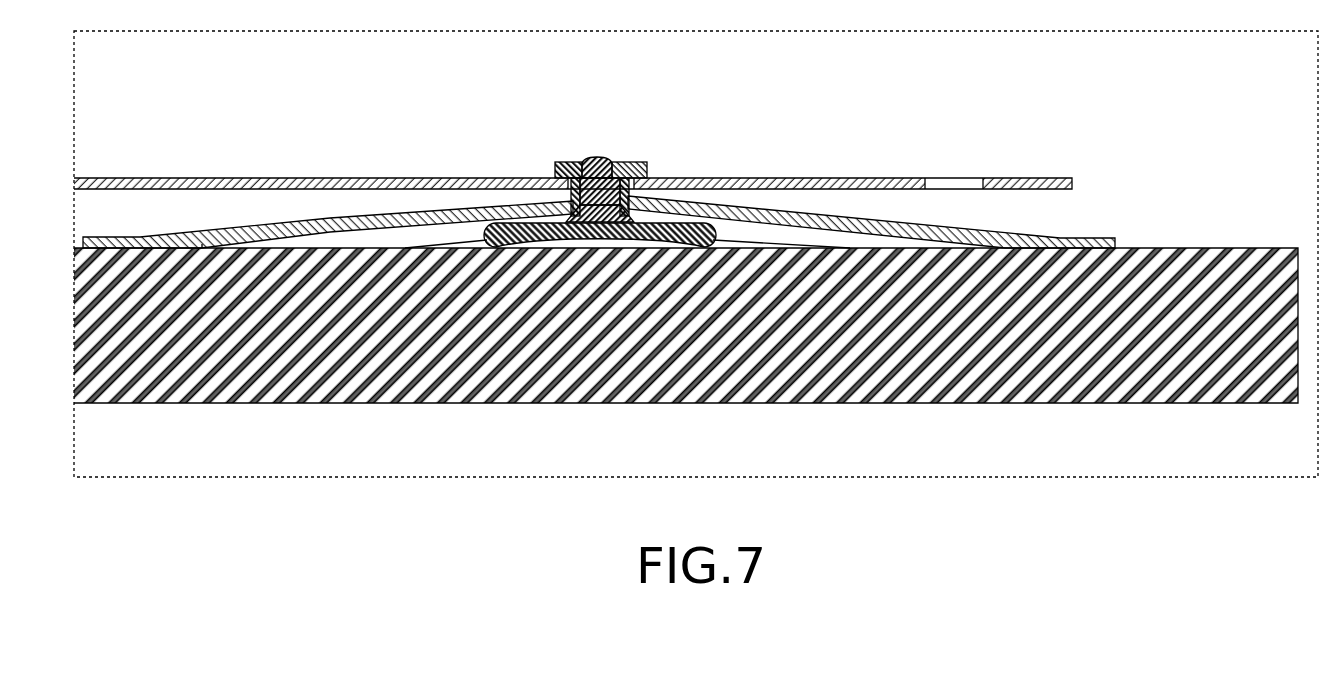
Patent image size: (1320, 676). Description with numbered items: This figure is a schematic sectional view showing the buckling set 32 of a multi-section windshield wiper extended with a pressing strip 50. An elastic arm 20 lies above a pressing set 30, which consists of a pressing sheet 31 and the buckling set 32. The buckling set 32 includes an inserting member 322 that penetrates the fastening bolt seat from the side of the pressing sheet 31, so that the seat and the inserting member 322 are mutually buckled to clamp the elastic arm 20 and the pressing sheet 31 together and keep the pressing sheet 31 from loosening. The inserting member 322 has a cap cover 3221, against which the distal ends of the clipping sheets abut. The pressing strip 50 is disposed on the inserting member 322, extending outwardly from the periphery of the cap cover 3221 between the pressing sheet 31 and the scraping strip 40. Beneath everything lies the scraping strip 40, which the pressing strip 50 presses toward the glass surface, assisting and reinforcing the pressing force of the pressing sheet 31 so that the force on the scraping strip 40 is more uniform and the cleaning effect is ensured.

The elastic arm 20 is at (815, 184).
The pressing set 30 is at (750, 91).
The pressing sheet 31 is at (757, 214).
The buckling set 32 is at (623, 161).
The inserting member 322 is at (569, 137).
The cap cover 3221 is at (572, 218).
The scraping strip 40 is at (1212, 278).
The pressing strip 50 is at (672, 236).